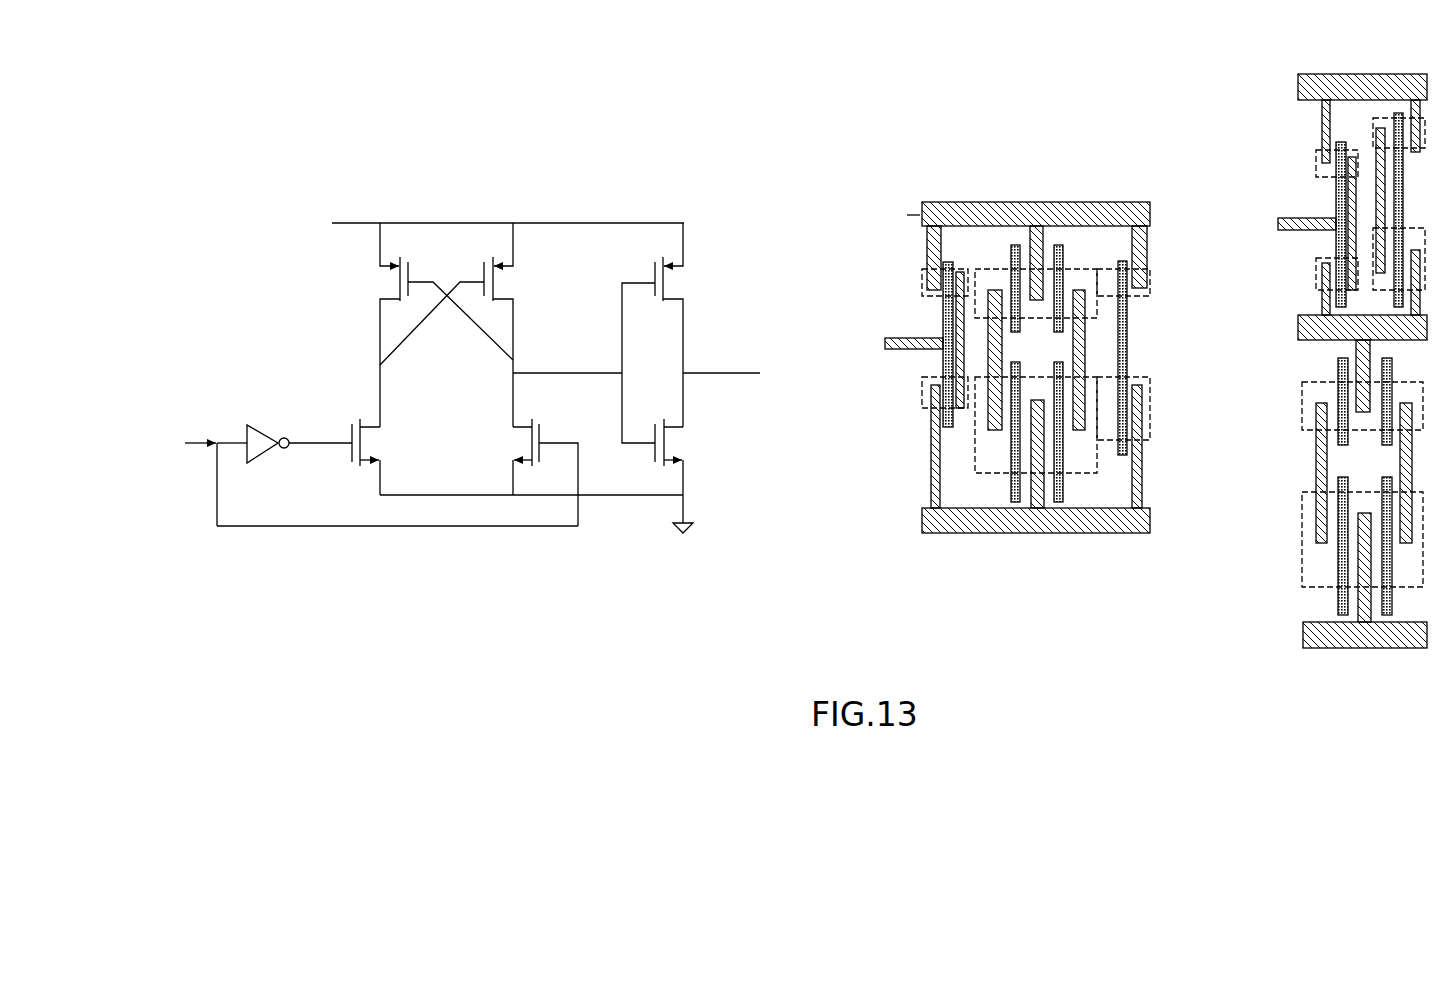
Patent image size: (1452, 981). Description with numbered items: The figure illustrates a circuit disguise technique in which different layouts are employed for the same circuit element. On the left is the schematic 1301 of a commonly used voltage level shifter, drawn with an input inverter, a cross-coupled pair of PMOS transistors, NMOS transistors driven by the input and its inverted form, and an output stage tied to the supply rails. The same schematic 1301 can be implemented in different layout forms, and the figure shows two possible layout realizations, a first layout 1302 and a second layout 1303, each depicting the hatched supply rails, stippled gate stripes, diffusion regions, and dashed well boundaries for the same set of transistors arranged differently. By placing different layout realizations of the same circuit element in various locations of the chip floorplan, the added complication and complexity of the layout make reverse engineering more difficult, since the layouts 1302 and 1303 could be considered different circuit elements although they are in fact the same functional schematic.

The level shifter schematic 1301 is at (262, 190).
The first layout realization 1302 is at (892, 162).
The second layout realization 1303 is at (1227, 75).